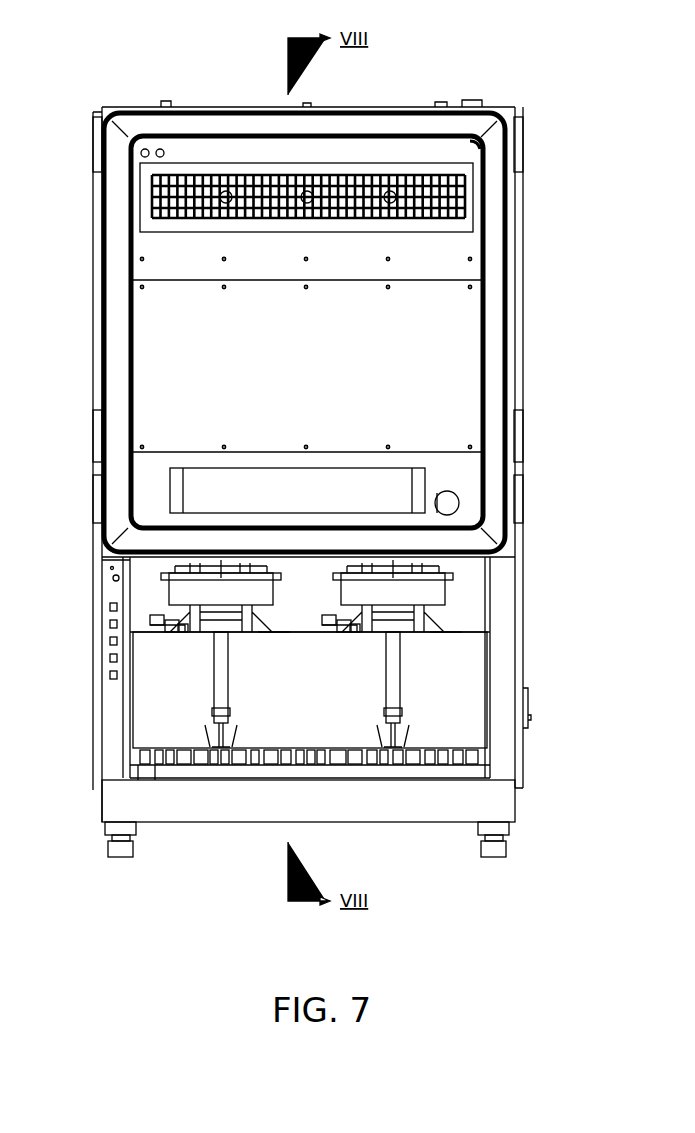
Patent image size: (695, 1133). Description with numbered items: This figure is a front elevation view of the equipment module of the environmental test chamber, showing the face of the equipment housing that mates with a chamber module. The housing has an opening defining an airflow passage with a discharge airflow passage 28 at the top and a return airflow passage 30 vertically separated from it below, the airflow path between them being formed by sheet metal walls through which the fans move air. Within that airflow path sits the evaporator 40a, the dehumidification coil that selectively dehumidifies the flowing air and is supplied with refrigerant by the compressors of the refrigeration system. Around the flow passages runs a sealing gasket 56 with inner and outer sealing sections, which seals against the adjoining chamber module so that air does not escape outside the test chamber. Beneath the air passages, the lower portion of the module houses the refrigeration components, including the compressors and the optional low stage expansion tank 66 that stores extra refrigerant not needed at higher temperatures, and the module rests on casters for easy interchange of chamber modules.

The discharge airflow passage 28 is at (205, 175).
The return airflow passage 30 is at (470, 468).
The evaporator 40a is at (395, 468).
The sealing gasket 56 is at (488, 142).
The low stage expansion tank 66 is at (478, 662).